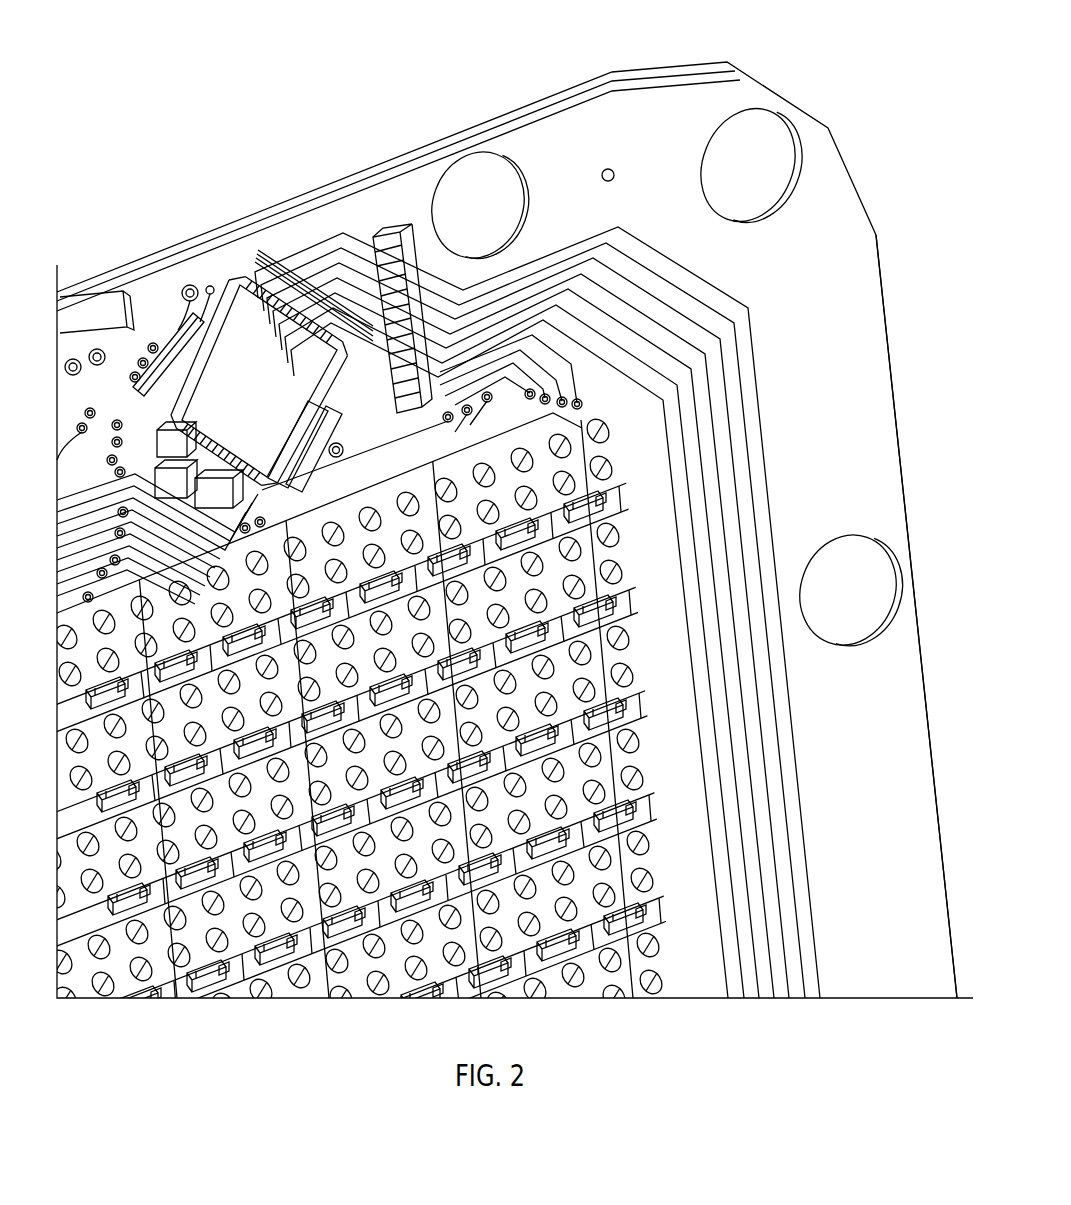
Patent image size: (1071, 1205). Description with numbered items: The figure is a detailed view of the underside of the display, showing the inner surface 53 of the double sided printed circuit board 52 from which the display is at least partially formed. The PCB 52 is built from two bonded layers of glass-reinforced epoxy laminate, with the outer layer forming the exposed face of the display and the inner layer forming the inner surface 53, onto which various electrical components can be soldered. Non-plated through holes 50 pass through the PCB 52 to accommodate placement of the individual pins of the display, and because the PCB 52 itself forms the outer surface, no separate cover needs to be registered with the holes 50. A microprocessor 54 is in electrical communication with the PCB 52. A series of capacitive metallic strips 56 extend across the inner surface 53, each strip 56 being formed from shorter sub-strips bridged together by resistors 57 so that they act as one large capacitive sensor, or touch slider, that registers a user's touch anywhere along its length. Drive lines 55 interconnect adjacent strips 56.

The non-plated through holes 50 is at (606, 436).
The double sided printed circuit board 52 is at (740, 93).
The inner surface 53 is at (876, 851).
The microprocessor 54 is at (266, 396).
The drive lines 55 is at (612, 762).
The capacitive metallic strips 56 is at (610, 512).
The resistors 57 is at (614, 543).